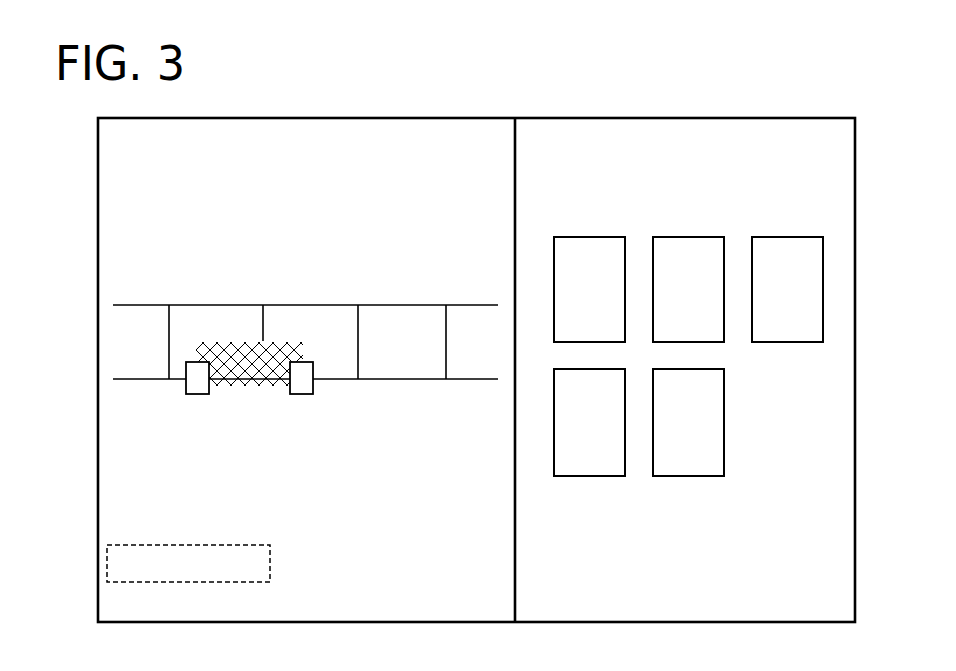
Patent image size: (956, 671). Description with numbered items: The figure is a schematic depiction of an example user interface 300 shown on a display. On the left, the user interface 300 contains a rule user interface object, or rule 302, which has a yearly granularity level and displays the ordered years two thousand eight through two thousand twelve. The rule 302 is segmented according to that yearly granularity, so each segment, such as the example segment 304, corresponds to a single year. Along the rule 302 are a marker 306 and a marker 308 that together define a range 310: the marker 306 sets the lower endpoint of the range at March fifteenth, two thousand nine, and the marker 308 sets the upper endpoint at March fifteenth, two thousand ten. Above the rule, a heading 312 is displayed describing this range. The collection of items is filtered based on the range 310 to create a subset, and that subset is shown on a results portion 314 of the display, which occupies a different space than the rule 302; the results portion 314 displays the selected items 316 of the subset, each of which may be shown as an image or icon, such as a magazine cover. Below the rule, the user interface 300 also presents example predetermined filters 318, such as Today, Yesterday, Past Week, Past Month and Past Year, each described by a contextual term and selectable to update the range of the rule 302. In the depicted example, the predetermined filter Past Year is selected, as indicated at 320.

The user interface 300 is at (545, 116).
The rule user interface object 302 is at (393, 298).
The segment 304 is at (234, 317).
The marker 306 is at (200, 394).
The marker 308 is at (306, 394).
The range 310 is at (226, 368).
The heading 312 is at (345, 175).
The results portion 314 is at (721, 136).
The selected items 316 is at (694, 499).
The predetermined filters 318 is at (298, 527).
The selected predetermined filter indication 320 is at (252, 582).